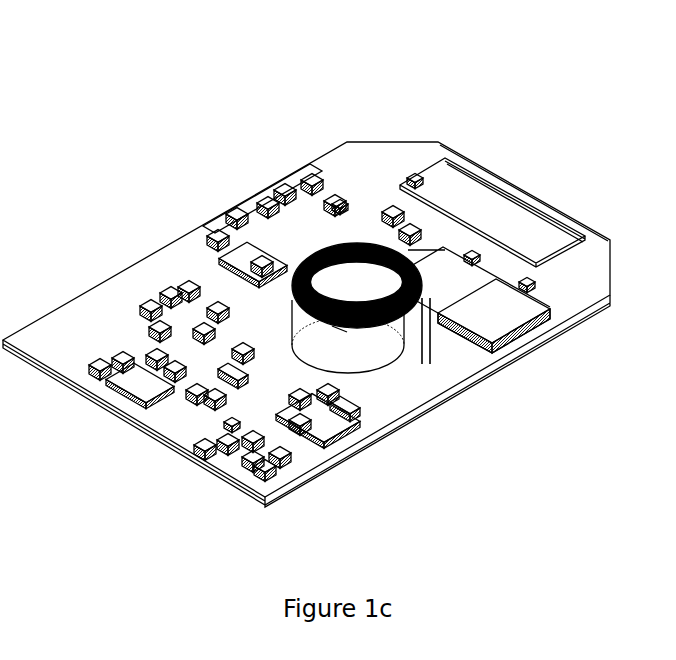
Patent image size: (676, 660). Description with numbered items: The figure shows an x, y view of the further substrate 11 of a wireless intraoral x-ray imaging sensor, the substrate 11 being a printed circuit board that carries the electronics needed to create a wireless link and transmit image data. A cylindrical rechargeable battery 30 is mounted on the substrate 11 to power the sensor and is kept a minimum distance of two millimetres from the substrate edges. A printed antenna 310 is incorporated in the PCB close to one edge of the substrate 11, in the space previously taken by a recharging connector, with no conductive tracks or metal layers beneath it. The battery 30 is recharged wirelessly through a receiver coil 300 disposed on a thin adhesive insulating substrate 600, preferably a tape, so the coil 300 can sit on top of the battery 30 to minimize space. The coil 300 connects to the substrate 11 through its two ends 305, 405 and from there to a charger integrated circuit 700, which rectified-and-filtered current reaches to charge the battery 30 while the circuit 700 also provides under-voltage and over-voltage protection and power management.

The further substrate 11 is at (412, 141).
The rechargeable battery 30 is at (368, 353).
The receiver coil 300 is at (330, 250).
The end of receiver coil 305 is at (413, 377).
The printed antenna 310 is at (510, 202).
The end of receiver coil 405 is at (438, 352).
The adhesive insulating substrate 600 is at (347, 331).
The integrated circuit 700 is at (217, 362).